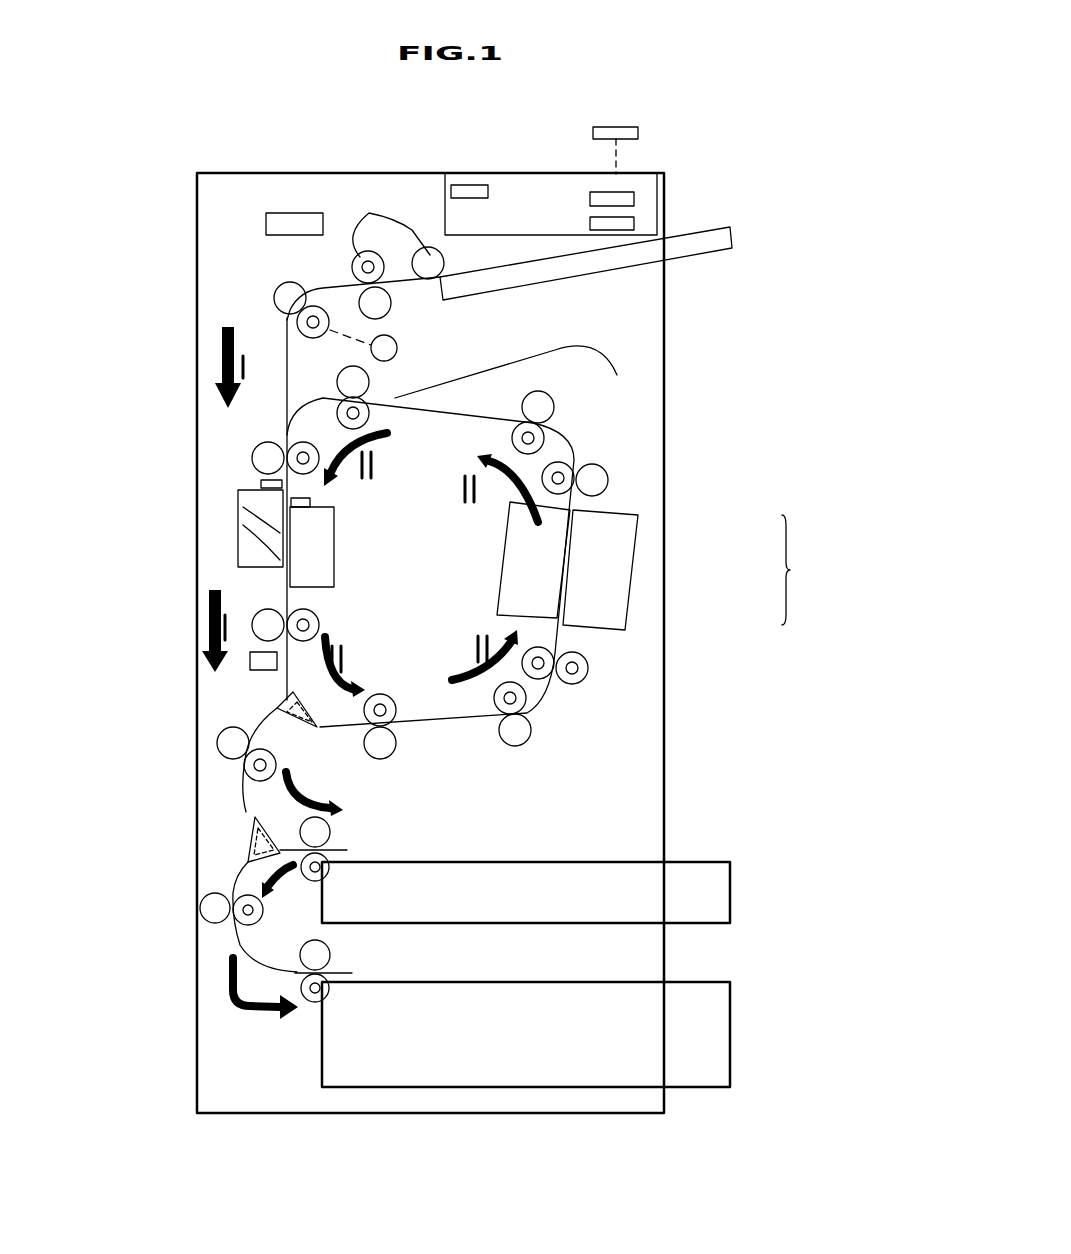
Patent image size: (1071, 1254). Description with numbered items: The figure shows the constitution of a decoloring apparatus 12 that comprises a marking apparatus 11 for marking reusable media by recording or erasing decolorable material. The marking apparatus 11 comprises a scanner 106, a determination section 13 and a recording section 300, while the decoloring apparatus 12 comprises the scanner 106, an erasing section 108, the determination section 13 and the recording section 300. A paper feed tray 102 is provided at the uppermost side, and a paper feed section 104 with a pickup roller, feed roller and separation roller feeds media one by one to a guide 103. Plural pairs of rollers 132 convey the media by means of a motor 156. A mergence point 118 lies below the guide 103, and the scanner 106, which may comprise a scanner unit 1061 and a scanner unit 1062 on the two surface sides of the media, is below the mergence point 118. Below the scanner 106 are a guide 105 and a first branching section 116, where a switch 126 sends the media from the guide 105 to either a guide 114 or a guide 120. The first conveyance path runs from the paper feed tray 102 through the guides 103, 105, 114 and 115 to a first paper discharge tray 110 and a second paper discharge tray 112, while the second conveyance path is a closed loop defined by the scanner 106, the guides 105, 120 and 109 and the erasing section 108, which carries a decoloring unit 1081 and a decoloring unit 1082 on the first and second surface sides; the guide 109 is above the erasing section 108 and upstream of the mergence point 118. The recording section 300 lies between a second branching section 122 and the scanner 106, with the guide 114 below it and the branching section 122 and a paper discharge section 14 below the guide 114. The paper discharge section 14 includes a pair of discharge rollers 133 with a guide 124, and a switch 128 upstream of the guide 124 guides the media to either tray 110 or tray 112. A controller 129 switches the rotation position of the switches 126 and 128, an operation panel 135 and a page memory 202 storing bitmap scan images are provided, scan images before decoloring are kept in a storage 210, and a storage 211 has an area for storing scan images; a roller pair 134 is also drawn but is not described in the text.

The marking apparatus 11 is at (170, 212).
The decoloring apparatus 12 is at (150, 162).
The determination section 13 is at (458, 187).
The paper discharge section 14 is at (280, 1042).
The paper feed tray 102 is at (717, 227).
The guide 103 is at (287, 335).
The paper feed section 104 is at (393, 251).
The guide 105 is at (290, 598).
The scanner 106 is at (250, 518).
The scanner unit 1061 is at (261, 484).
The scanner unit 1062 is at (245, 555).
The erasing section 108 is at (812, 570).
The decoloring unit 1081 is at (557, 555).
The decoloring unit 1082 is at (627, 583).
The guide 109 is at (468, 393).
The paper discharge tray 110 is at (732, 882).
The paper discharge tray 112 is at (732, 1025).
The guide 114 is at (242, 790).
The guide 115 is at (235, 942).
The first branching section 116 is at (278, 705).
The mergence point 118 is at (287, 435).
The guide 120 is at (440, 720).
The branching section 122 is at (245, 833).
The guide 124 is at (347, 850).
The switch 126 is at (278, 706).
The switch 128 is at (245, 862).
The controller 129 is at (300, 228).
The pairs of rollers 132 is at (290, 282).
The discharge rollers 133 is at (322, 835).
The second discharge roller pair 134 is at (328, 950).
The operation panel 135 is at (643, 177).
The motor 156 is at (397, 348).
The page memory 202 is at (590, 222).
The storage 210 is at (590, 197).
The storage 211 is at (610, 124).
The recording section 300 is at (252, 652).